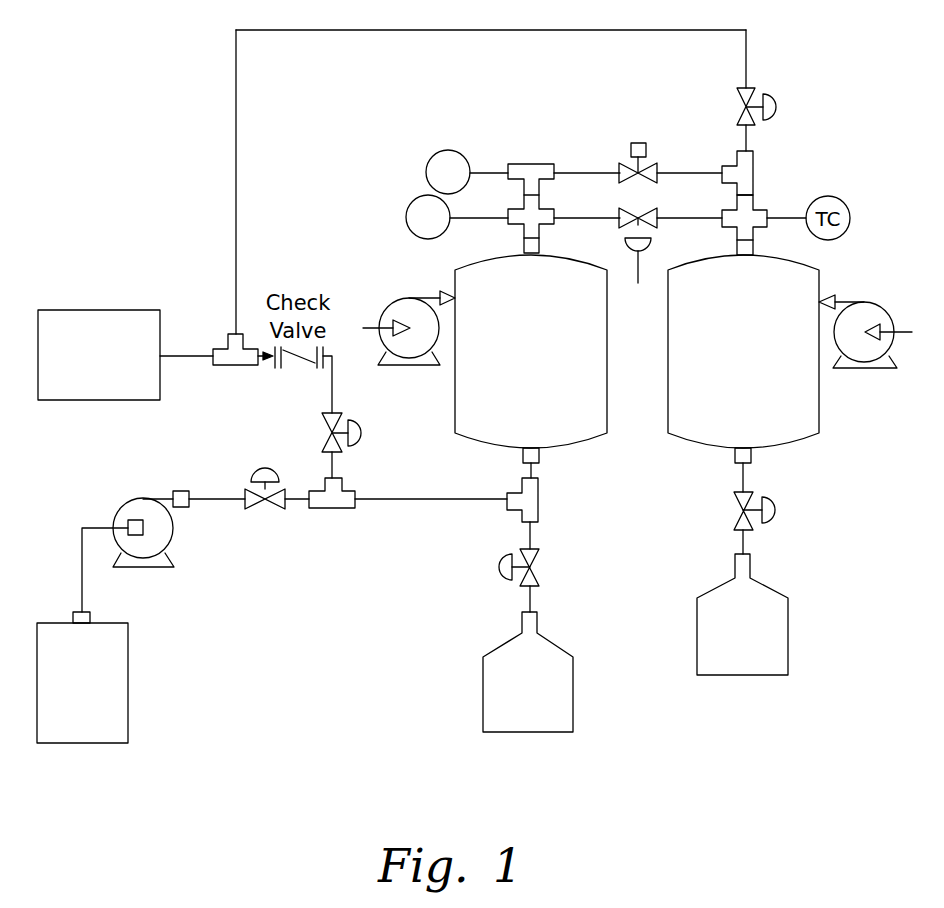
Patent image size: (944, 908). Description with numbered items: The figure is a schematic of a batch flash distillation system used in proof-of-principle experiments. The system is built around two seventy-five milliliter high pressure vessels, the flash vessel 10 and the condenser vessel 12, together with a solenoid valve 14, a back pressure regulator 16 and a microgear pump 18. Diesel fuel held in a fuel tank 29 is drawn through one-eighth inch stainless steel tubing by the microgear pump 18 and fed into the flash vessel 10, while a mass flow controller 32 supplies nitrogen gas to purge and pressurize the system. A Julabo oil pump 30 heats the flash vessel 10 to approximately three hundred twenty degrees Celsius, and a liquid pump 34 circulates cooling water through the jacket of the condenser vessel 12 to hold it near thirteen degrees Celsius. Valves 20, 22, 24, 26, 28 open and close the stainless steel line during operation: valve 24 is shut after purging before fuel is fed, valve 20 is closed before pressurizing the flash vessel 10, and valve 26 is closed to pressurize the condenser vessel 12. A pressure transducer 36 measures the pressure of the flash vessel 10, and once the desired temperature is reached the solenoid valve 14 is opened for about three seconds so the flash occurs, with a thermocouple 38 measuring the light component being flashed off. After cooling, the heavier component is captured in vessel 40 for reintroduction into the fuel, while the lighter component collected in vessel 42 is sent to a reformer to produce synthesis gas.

The flash vessel 10 is at (516, 362).
The condenser vessel 12 is at (728, 362).
The solenoid valve 14 is at (636, 142).
The back pressure regulator 16 is at (638, 259).
The microgear pump 18 is at (125, 513).
The valve 20 is at (265, 468).
The valve 22 is at (358, 420).
The valve 24 is at (498, 560).
The valve 26 is at (775, 500).
The valve 28 is at (777, 96).
The fuel tank 29 is at (65, 700).
The oil pump 30 is at (388, 302).
The mass flow controller 32 is at (83, 371).
The liquid pump 34 is at (880, 370).
The pressure transducer 36 is at (414, 230).
The thermocouple 38 is at (434, 185).
The vessel 40 is at (513, 701).
The vessel 42 is at (728, 645).